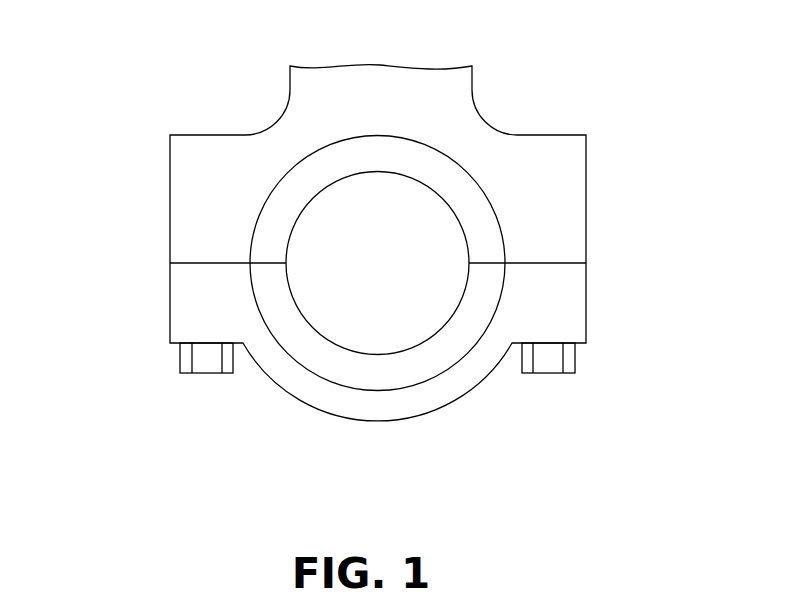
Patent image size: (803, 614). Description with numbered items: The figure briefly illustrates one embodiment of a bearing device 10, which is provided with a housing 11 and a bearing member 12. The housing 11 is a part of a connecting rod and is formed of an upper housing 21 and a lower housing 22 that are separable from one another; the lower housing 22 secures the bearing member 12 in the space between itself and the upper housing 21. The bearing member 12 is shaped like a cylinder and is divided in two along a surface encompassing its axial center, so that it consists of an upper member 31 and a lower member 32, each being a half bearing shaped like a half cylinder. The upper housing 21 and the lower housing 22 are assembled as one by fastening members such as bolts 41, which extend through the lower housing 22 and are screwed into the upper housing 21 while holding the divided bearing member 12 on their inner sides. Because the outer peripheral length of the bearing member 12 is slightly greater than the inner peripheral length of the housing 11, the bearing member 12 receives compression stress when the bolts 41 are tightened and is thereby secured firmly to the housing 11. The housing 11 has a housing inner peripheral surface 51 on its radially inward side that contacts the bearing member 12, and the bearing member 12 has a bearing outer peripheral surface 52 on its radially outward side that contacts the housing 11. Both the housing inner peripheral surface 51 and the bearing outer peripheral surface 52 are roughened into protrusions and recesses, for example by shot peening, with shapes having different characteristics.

The bearing device 10 is at (563, 110).
The housing 11 is at (150, 152).
The bearing member 12 is at (302, 143).
The upper housing 21 is at (192, 208).
The lower housing 22 is at (187, 303).
The upper member 31 is at (485, 212).
The lower member 32 is at (418, 365).
The bolts 41 is at (208, 373).
The housing inner peripheral surface 51 is at (314, 378).
The bearing outer peripheral surface 52 is at (288, 170).